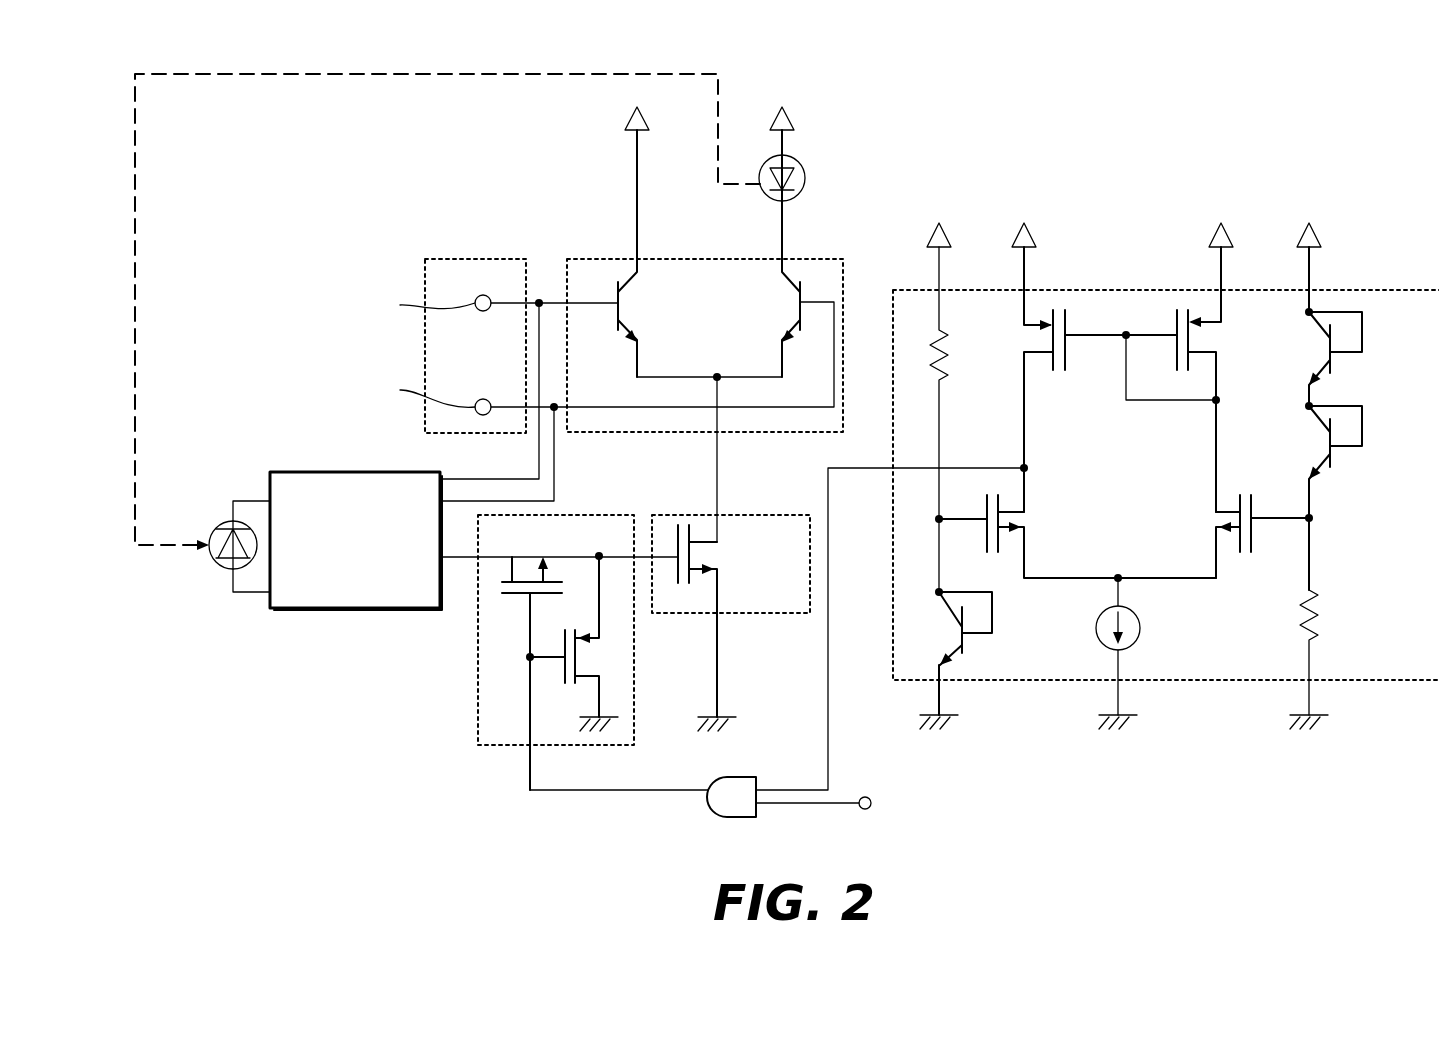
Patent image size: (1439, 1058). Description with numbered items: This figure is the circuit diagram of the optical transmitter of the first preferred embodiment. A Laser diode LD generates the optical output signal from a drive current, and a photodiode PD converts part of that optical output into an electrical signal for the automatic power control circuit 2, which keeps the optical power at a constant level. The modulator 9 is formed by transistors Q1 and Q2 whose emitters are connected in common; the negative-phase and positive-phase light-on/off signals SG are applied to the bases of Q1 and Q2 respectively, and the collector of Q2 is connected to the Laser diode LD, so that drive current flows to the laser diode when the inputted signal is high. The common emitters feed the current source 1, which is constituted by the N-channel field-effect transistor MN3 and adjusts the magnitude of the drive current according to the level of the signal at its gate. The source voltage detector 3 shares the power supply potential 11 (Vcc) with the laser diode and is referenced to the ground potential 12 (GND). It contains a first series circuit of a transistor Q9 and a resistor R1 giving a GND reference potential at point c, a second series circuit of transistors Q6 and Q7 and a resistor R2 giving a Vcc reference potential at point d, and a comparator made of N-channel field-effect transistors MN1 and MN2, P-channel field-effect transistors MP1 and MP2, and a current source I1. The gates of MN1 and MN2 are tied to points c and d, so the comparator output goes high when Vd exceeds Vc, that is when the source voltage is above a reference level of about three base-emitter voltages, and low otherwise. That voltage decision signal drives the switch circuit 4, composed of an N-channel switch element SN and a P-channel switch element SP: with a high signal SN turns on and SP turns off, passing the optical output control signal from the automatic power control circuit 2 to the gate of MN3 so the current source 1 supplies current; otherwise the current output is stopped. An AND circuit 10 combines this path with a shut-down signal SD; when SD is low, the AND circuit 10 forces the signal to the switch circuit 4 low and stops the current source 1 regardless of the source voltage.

The current source 1 is at (731, 623).
The automatic power control circuit 2 is at (340, 472).
The source voltage detector 3 is at (1375, 289).
The switch circuit 4 is at (555, 652).
The modulator 9 is at (705, 281).
The AND circuit 10 is at (777, 652).
The power supply potential 11 is at (627, 122).
The ground potential 12 is at (945, 722).
The laser diode LD is at (805, 185).
The photodiode PD is at (213, 552).
The light-on/off signal SG is at (465, 259).
The shut-down signal SD is at (834, 803).
The transistor Q1 is at (640, 253).
The transistor Q2 is at (778, 253).
The transistor Q6 is at (1355, 326).
The transistor Q7 is at (1355, 496).
The transistor Q9 is at (968, 651).
The N-channel field-effect transistor MN1 is at (1065, 536).
The N-channel field-effect transistor MN2 is at (1243, 536).
The N-channel field-effect transistor MN3 is at (767, 657).
The P-channel field-effect transistor MP1 is at (1073, 379).
The P-channel field-effect transistor MP2 is at (1227, 379).
The switch element SN is at (532, 657).
The switch element SP is at (574, 644).
The resistor R1 is at (954, 419).
The resistor R2 is at (1320, 644).
The current source I1 is at (1135, 651).